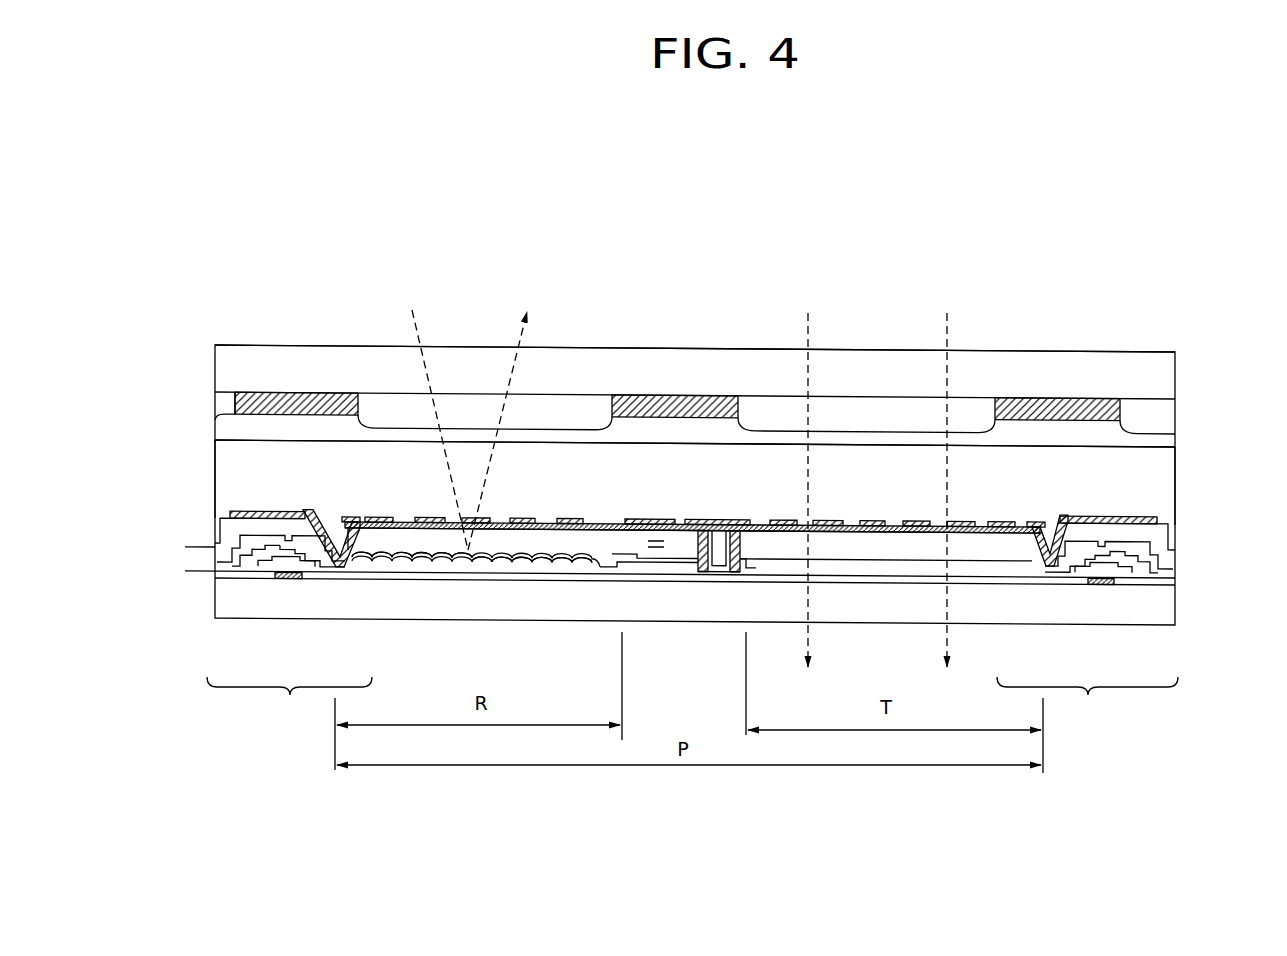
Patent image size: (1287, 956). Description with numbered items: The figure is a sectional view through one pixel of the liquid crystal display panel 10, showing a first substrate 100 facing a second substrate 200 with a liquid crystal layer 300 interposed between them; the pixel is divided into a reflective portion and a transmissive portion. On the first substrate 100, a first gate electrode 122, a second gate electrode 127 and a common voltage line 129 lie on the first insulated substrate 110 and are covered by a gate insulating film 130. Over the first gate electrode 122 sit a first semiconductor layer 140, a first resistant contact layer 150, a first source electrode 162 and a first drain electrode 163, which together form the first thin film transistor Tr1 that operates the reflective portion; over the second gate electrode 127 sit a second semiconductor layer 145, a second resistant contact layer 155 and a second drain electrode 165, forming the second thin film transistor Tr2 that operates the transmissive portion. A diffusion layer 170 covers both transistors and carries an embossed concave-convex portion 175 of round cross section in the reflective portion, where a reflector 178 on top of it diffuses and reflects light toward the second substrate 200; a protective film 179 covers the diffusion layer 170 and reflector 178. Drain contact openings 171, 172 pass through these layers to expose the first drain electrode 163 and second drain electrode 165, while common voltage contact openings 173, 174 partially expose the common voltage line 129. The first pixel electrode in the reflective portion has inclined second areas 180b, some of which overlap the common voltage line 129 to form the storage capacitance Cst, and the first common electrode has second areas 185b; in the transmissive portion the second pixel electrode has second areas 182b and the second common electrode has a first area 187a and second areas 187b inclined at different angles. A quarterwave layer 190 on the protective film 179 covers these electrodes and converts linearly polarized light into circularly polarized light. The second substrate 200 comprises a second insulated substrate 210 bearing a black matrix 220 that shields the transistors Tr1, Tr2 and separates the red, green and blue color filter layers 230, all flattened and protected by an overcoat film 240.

The liquid crystal display panel 10 is at (927, 188).
The first substrate 100 is at (1148, 718).
The second substrate 200 is at (1029, 277).
The first insulated substrate 110 is at (1177, 603).
The first gate electrode 122 is at (288, 579).
The second gate electrode 127 is at (1098, 580).
The common voltage line 129 is at (689, 576).
The gate insulating film 130 is at (1177, 578).
The first semiconductor layer 140 is at (312, 567).
The second semiconductor layer 145 is at (1124, 567).
The first resistant contact layer 150 is at (258, 552).
The second resistant contact layer 155 is at (1067, 552).
The first source electrode 162 is at (236, 568).
The first drain electrode 163 is at (338, 566).
The second drain electrode 165 is at (1048, 570).
The diffusion layer 170 is at (528, 559).
The drain contact opening 171 is at (338, 506).
The drain contact opening 172 is at (1052, 512).
The common voltage contact opening 173 is at (737, 520).
The common voltage contact opening 174 is at (702, 520).
The concave-convex portion 175 is at (460, 556).
The reflector 178 is at (561, 560).
The protective film 179 is at (1177, 552).
The second areas of first pixel electrode 180b is at (378, 517).
The second areas of second pixel electrode 182b is at (832, 517).
The second areas of first common electrode 185b is at (428, 517).
The first area of second common electrode 187a is at (782, 517).
The second areas of second common electrode 187b is at (873, 517).
The quarterwave layer 190 is at (403, 530).
The second insulated substrate 210 is at (1177, 372).
The black matrix 220 is at (287, 392).
The color filter layers 230 is at (568, 403).
The overcoat film 240 is at (1177, 438).
The liquid crystal layer 300 is at (1177, 484).
The first thin film transistor Tr1 is at (289, 698).
The second thin film transistor Tr2 is at (1087, 698).
The storage capacitance Cst is at (670, 544).